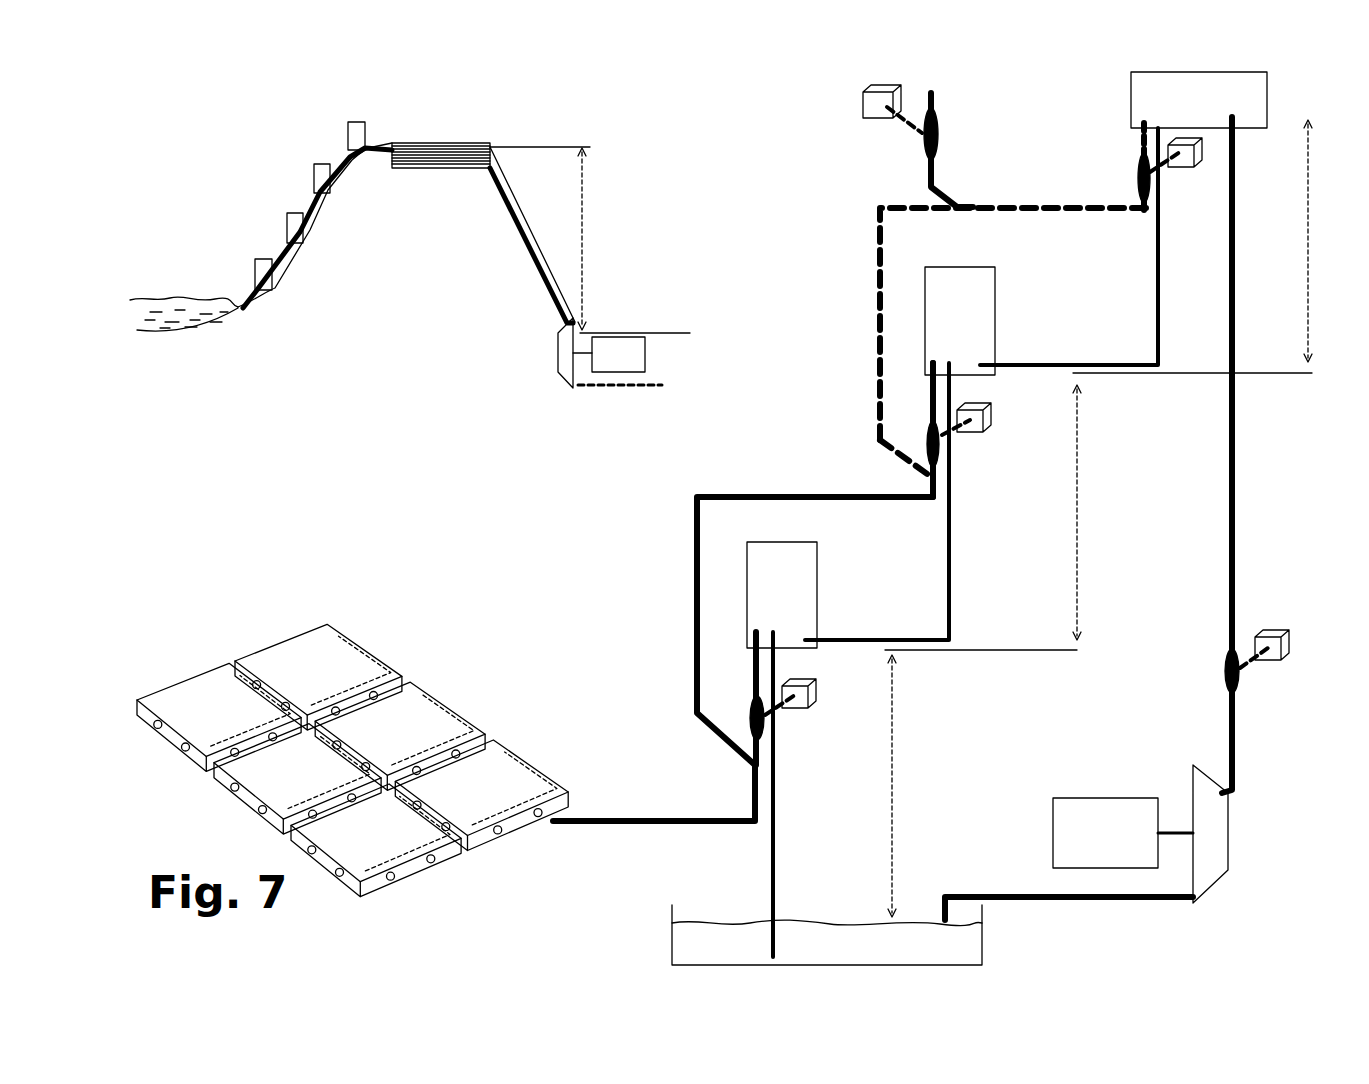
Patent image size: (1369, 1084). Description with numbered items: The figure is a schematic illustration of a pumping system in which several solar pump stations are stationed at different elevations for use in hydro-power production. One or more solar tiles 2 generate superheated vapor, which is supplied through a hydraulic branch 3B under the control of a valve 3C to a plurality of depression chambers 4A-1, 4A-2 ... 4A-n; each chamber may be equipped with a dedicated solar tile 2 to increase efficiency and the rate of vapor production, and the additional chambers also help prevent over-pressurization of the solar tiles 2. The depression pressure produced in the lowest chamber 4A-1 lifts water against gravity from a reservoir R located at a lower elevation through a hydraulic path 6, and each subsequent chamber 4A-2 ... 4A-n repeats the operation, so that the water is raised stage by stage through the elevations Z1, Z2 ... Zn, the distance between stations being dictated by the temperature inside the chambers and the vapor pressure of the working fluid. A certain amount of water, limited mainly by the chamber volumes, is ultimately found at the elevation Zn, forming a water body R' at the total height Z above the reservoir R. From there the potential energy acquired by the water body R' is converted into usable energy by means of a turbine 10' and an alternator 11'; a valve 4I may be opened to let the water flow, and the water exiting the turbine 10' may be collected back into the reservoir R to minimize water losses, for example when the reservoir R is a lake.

The solar tile 2 is at (360, 720).
The hydraulic branch 3B is at (873, 388).
The valve 3C is at (1200, 165).
The first depression chamber 4A-1 is at (255, 273).
The second depression chamber 4A-2 is at (957, 305).
The n-th depression chamber 4A-n is at (348, 137).
The valve 4I is at (1270, 628).
The hydraulic path 6 is at (799, 794).
The reservoir R is at (556, 631).
The water body R' is at (452, 120).
The turbine 10' is at (902, 610).
The alternator 11' is at (883, 563).
The elevation Z is at (595, 239).
The first elevation Z1 is at (916, 786).
The second elevation Z2 is at (1013, 517).
The n-th elevation Zn is at (1212, 246).